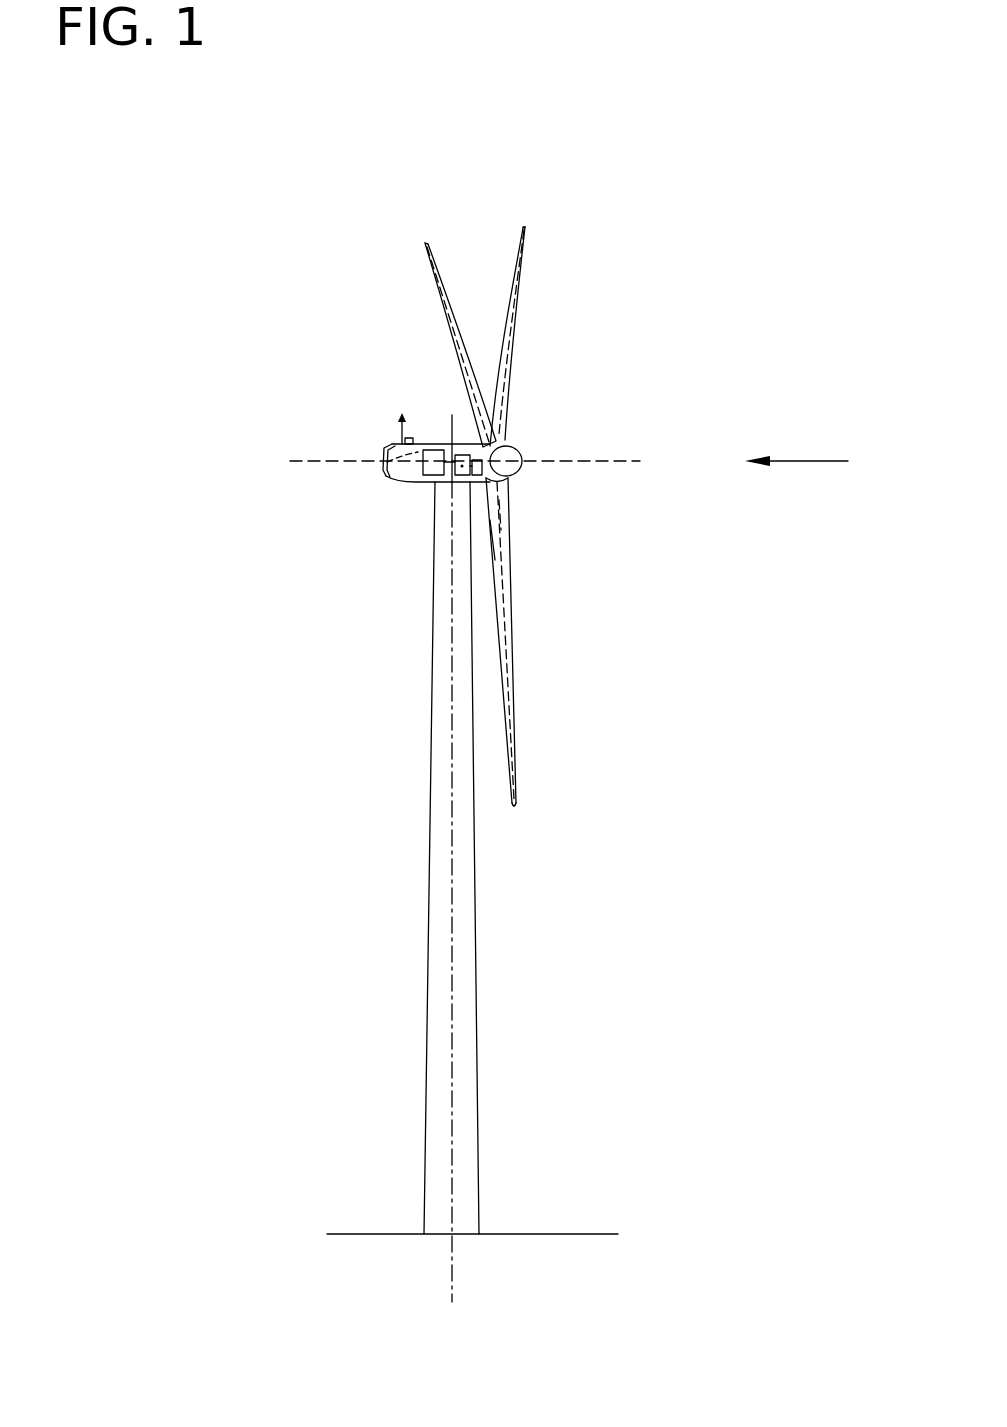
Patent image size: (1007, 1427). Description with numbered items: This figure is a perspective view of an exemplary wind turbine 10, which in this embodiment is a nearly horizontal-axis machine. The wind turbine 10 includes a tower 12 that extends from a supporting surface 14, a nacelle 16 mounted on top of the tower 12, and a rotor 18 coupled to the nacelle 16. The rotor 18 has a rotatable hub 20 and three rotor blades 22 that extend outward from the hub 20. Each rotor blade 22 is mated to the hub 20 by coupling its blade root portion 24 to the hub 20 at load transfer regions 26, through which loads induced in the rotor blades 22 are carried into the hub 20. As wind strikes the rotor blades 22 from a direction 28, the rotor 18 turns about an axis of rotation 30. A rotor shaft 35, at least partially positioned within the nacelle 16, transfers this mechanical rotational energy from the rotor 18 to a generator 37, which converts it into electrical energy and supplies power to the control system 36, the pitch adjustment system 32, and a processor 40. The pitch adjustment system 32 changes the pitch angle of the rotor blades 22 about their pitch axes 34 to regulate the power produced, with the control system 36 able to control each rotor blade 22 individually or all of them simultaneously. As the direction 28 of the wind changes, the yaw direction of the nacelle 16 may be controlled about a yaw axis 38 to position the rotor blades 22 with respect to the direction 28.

The wind turbine 10 is at (212, 243).
The tower 12 is at (427, 1012).
The supporting surface 14 is at (383, 1233).
The nacelle 16 is at (411, 482).
The rotor 18 is at (540, 364).
The rotatable hub 20 is at (516, 455).
The rotor blade 22 is at (447, 312).
The blade root portion 24 is at (506, 568).
The load transfer region 26 is at (505, 480).
The direction 28 is at (818, 460).
The axis of rotation 30 is at (585, 462).
The pitch adjustment system 32 is at (510, 520).
The pitch axis 34 is at (425, 250).
The rotor shaft 35 is at (445, 441).
The control system 36 is at (455, 485).
The generator 37 is at (382, 451).
The yaw axis 38 is at (452, 930).
The processor 40 is at (466, 440).